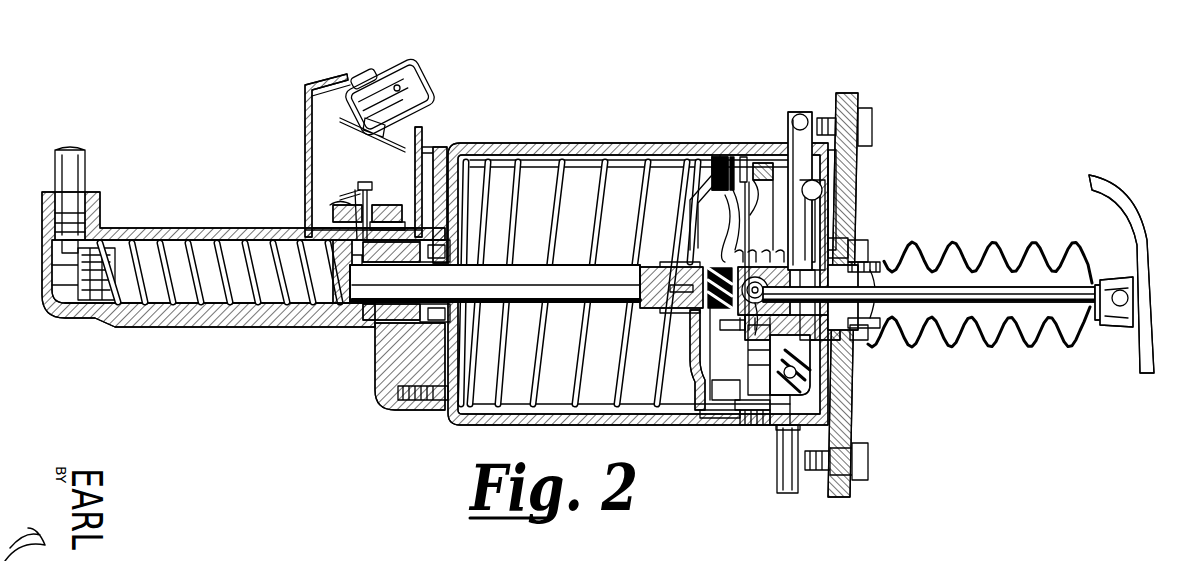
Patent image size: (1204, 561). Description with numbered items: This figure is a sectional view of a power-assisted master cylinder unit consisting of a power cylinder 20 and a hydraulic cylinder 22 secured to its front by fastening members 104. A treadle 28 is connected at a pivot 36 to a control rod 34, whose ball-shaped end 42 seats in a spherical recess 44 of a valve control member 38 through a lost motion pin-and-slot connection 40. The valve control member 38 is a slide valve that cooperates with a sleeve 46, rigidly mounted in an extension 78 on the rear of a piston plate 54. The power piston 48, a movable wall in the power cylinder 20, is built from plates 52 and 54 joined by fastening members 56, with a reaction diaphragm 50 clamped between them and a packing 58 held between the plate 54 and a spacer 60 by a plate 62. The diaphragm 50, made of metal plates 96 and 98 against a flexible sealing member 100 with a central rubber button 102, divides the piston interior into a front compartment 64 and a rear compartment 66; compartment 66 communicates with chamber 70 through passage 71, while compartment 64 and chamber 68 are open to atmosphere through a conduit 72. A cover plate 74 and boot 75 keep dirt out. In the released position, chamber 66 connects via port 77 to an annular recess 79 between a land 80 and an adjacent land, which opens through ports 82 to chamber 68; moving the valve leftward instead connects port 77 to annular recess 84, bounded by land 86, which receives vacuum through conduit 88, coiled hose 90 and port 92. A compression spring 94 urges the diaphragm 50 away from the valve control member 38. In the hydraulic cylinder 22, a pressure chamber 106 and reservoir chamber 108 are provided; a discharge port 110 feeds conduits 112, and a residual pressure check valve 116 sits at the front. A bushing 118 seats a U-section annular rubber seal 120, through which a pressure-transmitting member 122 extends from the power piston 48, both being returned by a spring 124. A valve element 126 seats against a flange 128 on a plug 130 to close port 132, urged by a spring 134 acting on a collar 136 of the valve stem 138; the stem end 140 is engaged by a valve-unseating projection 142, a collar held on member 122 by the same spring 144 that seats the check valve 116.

The power cylinder 20 is at (485, 430).
The hydraulic cylinder 22 is at (232, 322).
The treadle 28 is at (1115, 192).
The control rod 34 is at (1035, 285).
The pivotal connection 36 is at (1120, 310).
The valve control member 38 is at (862, 345).
The lost motion pin-and-slot connection 40 is at (808, 373).
The ball-shaped end 42 is at (715, 268).
The spherical recess 44 is at (764, 362).
The sleeve 46 is at (850, 380).
The power piston 48 is at (705, 160).
The reaction diaphragm 50 is at (705, 400).
The piston plate 52 is at (706, 182).
The piston plate 54 is at (752, 165).
The fastening members 56 is at (718, 420).
The packing 58 is at (775, 427).
The spacer 60 is at (774, 160).
The plate 62 is at (780, 445).
The front compartment 64 is at (722, 193).
The rear compartment 66 is at (750, 428).
The chamber 68 is at (866, 147).
The chamber 70 is at (620, 160).
The passage 71 is at (738, 172).
The conduit 72 is at (790, 485).
The cover plate 74 is at (848, 420).
The boot 75 is at (985, 345).
The port 77 is at (800, 262).
The extension 78 is at (870, 242).
The annular recess 79 is at (762, 271).
The land 80 is at (763, 281).
The ports 82 is at (785, 325).
The annular recess 84 is at (862, 262).
The land 86 is at (882, 268).
The conduit 88 is at (802, 118).
The coiled hose 90 is at (842, 208).
The port 92 is at (846, 242).
The compression spring 94 is at (690, 418).
The metal plate 96 is at (700, 350).
The metal plate 98 is at (740, 412).
The flexible sealing member 100 is at (712, 412).
The rubber button 102 is at (683, 312).
The fastening members 104 is at (415, 405).
The pressure chamber 106 is at (282, 302).
The reservoir chamber 108 is at (325, 129).
The discharge port 110 is at (90, 217).
The conduits 112 is at (78, 172).
The residual pressure check valve 116 is at (72, 285).
The annular flange member or bushing 118 is at (385, 352).
The U-section annular rubber seal 120 is at (382, 328).
The pressure-transmitting member 122 is at (582, 290).
The spring 124 is at (522, 188).
The valve element 126 is at (318, 218).
The flange 128 is at (385, 203).
The plug 130 is at (388, 222).
The port 132 is at (345, 210).
The spring 134 is at (366, 196).
The collar 136 is at (362, 182).
The valve stem 138 is at (350, 195).
The end of valve stem 140 is at (421, 205).
The valve-unseating projection 142 is at (345, 305).
The spring 144 is at (170, 297).